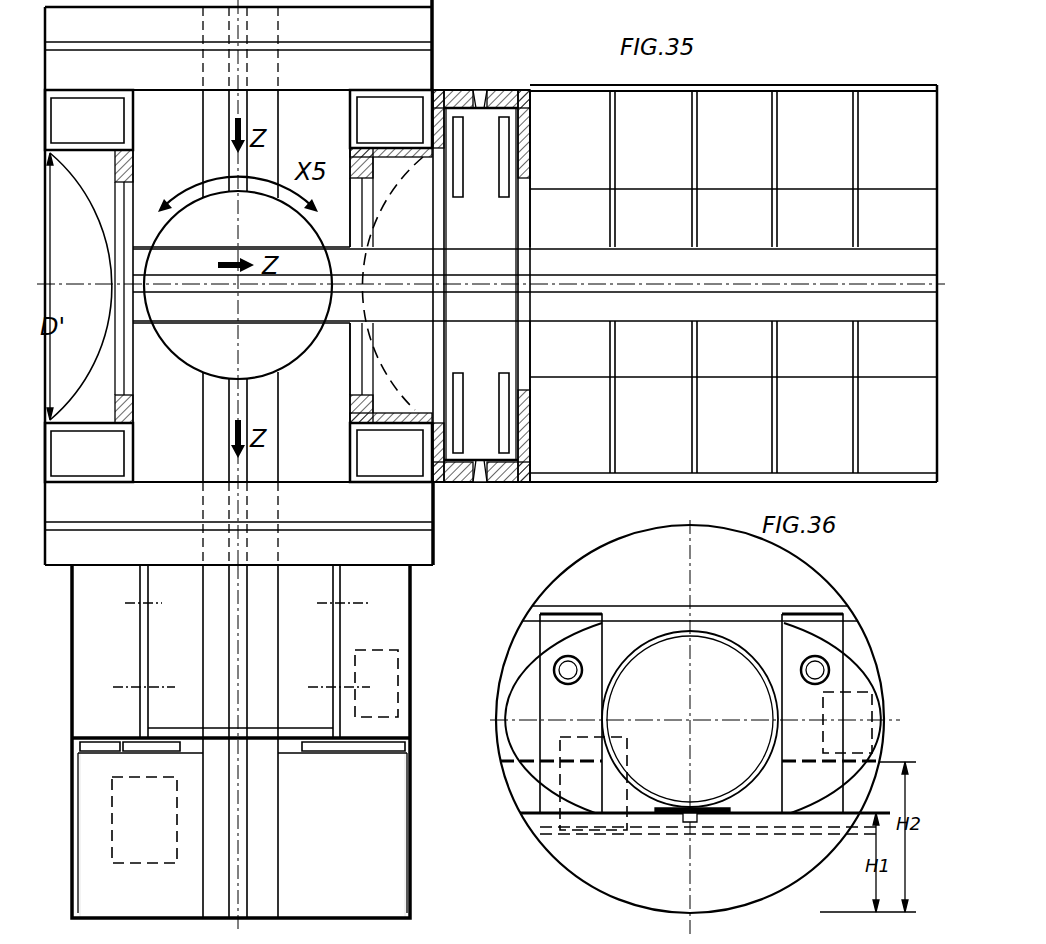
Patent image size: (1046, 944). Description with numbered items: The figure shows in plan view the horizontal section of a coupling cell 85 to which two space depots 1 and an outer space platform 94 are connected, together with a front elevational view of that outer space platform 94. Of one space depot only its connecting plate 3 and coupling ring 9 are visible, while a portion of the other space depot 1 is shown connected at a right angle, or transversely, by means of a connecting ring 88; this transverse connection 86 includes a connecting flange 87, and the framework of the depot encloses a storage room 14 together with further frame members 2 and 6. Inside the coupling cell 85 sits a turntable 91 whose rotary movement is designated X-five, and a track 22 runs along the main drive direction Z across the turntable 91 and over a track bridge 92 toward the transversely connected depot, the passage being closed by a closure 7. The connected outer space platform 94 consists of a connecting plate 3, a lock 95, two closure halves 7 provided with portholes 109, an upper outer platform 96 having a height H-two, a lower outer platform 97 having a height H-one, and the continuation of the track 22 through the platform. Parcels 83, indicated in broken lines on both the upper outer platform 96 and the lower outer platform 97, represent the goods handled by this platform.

In FIG. 35, the space depot 1 is at (577, 122).
In FIG. 35, the frame column 2 is at (752, 86).
In FIG. 35, the connecting plate 3 is at (507, 92).
In FIG. 35, the frame bottom rail 6 is at (845, 100).
In FIG. 35, the closure 7 is at (425, 727).
In FIG. 36, the closure 7 is at (857, 683).
In FIG. 35, the coupling ring 9 is at (473, 513).
In FIG. 35, the storage room 14 is at (845, 125).
In FIG. 35, the track 22 is at (320, 826).
In FIG. 36, the track 22 is at (712, 810).
In FIG. 35, the parcels 83 is at (140, 878).
In FIG. 36, the parcels 83 is at (865, 715).
In FIG. 35, the coupling cell 85 is at (400, 70).
In FIG. 35, the transverse connection 86 is at (120, 263).
In FIG. 35, the connecting flange 87 is at (350, 414).
In FIG. 35, the connecting ring 88 is at (432, 410).
In FIG. 35, the turntable 91 is at (300, 335).
In FIG. 35, the track bridge 92 is at (495, 255).
In FIG. 35, the outer space platform 94 is at (362, 590).
In FIG. 36, the outer space platform 94 is at (803, 595).
In FIG. 35, the lock 95 is at (332, 625).
In FIG. 36, the lock 95 is at (760, 682).
In FIG. 35, the upper outer platform 96 is at (385, 630).
In FIG. 36, the upper outer platform 96 is at (860, 757).
In FIG. 35, the lower outer platform 97 is at (370, 795).
In FIG. 36, the lower outer platform 97 is at (820, 812).
In FIG. 36, the portholes 109 is at (826, 662).